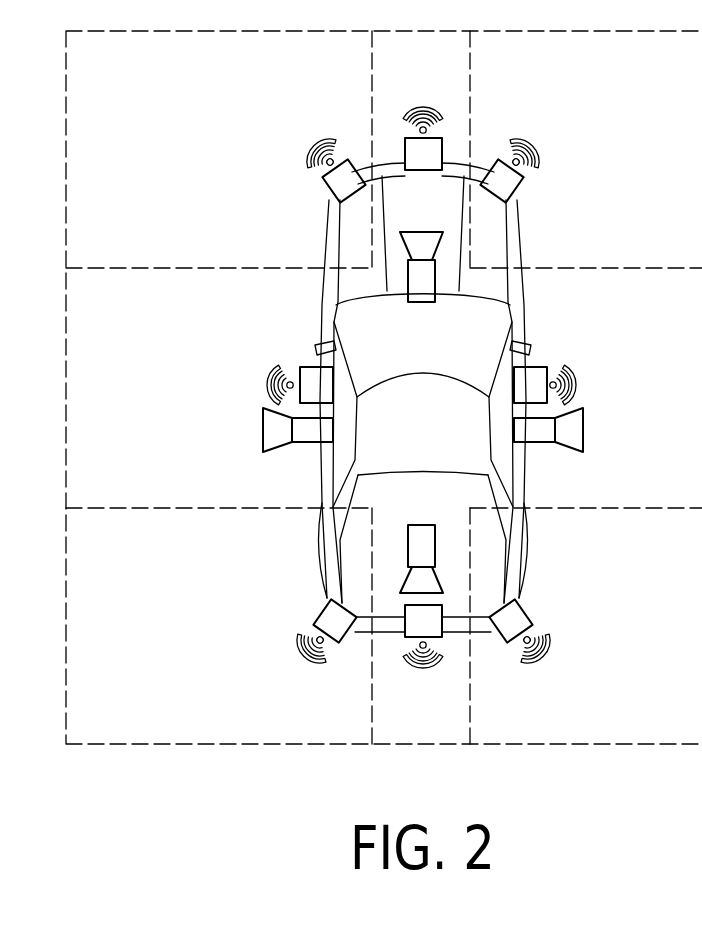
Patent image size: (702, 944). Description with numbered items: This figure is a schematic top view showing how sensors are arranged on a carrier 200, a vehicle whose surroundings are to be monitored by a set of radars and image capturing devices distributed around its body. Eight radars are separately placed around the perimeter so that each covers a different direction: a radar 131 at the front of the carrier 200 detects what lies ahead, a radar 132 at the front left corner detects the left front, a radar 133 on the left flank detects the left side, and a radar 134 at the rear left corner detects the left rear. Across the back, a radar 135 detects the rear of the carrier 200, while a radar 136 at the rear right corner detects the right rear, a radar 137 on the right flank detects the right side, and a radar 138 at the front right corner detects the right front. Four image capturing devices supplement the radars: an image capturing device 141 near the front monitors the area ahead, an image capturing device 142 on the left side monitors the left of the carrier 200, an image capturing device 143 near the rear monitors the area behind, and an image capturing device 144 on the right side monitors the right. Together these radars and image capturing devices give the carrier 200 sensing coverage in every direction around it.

The carrier 200 is at (513, 238).
The radar 131 is at (423, 107).
The radar 132 is at (325, 140).
The radar 133 is at (268, 377).
The radar 134 is at (293, 662).
The radar 135 is at (423, 673).
The radar 136 is at (537, 662).
The radar 137 is at (580, 373).
The radar 138 is at (524, 140).
The image capturing device 141 is at (425, 278).
The image capturing device 142 is at (270, 430).
The image capturing device 143 is at (425, 549).
The image capturing device 144 is at (577, 430).